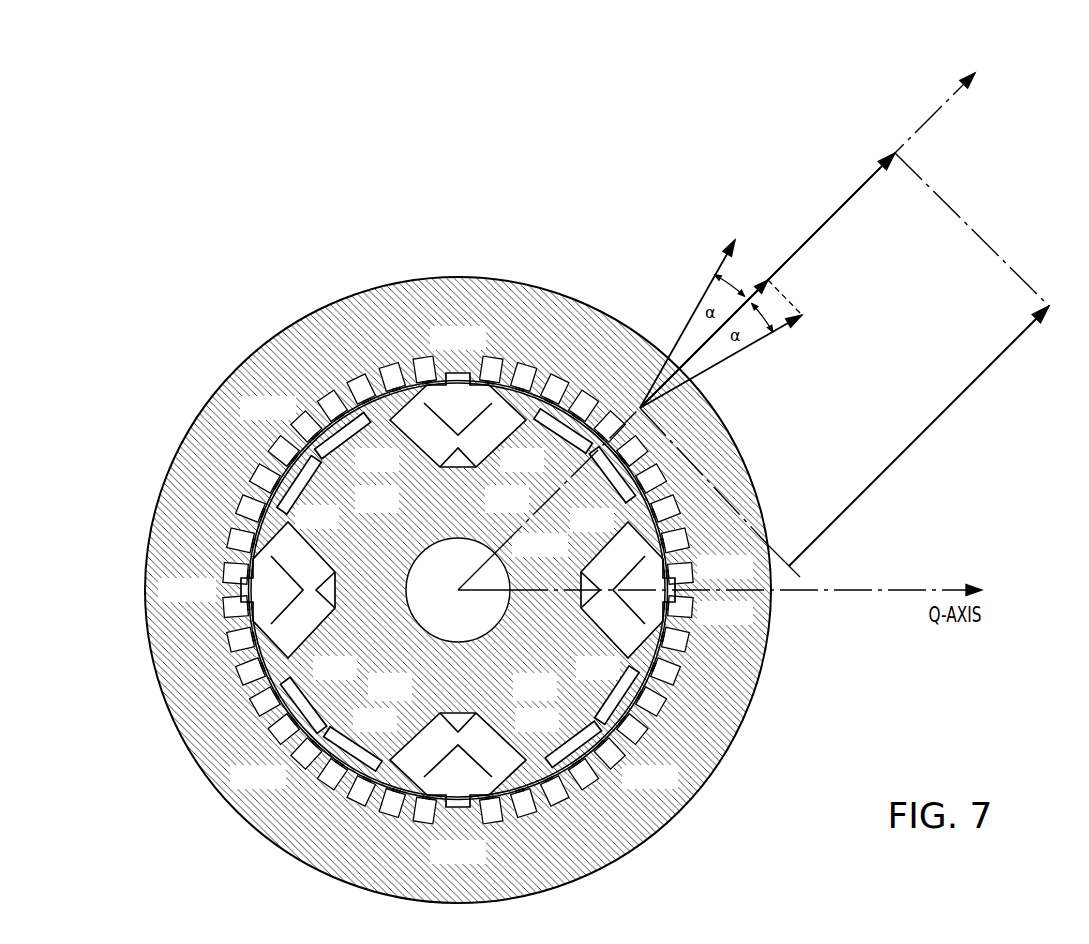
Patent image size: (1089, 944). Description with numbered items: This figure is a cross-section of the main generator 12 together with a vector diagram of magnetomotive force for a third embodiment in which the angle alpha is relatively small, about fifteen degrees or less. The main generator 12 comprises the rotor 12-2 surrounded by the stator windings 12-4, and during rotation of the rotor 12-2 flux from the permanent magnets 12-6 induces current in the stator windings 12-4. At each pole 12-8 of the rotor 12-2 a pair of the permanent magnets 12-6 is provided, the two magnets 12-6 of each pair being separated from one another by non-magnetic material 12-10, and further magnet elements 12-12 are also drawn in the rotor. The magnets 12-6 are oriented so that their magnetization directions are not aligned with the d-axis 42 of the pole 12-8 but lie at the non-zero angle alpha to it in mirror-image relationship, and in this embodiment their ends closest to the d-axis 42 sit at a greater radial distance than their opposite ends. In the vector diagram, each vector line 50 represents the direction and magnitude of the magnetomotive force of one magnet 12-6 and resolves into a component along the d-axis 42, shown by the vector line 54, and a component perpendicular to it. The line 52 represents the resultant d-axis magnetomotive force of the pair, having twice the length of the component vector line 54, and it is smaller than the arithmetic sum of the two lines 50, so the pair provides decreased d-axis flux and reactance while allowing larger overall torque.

The main generator 12 is at (185, 383).
The rotor 12-2 is at (380, 427).
The stator windings 12-4 is at (184, 742).
The permanent magnets 12-6 is at (345, 440).
The pole 12-8 is at (396, 509).
The non-magnetic material 12-10 is at (318, 450).
The V-shaped permanent magnet pair 12-12 is at (490, 405).
The d-axis 42 is at (940, 100).
The vector lines 50 is at (685, 322).
The line 52 is at (838, 208).
The vector line 54 is at (765, 279).